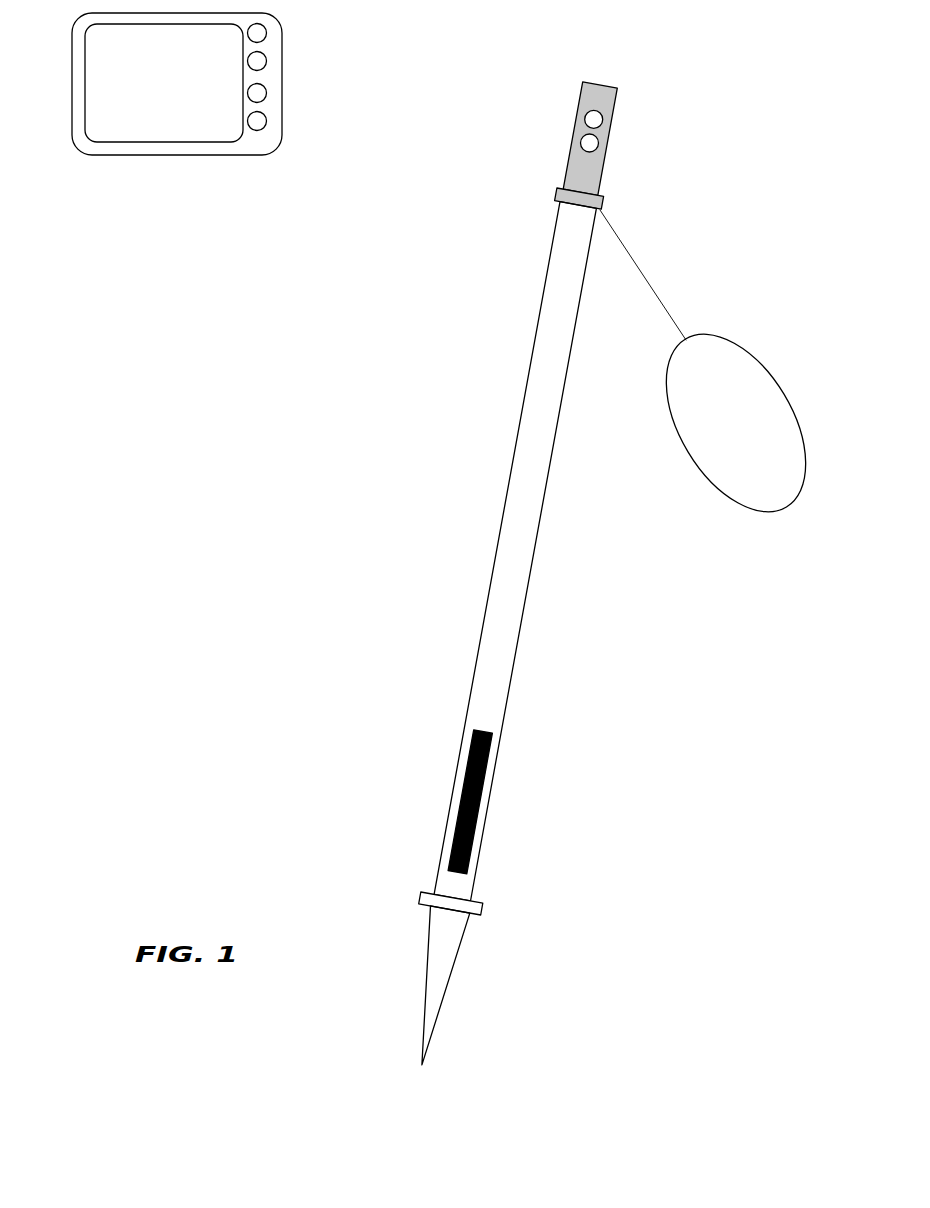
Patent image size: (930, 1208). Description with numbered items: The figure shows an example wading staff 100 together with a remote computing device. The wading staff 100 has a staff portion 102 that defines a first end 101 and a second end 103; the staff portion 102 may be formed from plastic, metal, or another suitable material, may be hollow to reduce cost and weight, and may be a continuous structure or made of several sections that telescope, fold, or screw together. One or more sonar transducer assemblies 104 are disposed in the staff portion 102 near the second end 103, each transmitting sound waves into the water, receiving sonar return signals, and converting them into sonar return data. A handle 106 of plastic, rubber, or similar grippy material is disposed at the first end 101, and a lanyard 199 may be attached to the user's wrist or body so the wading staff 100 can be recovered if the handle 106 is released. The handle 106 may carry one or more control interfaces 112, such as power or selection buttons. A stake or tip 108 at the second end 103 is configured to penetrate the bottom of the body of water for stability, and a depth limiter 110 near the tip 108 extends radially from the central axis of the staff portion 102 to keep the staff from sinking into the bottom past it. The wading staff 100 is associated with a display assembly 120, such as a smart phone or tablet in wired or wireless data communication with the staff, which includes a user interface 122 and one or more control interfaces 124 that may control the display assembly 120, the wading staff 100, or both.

The wading staff 100 is at (562, 555).
The first end 101 is at (516, 127).
The staff portion 102 is at (504, 551).
The second end 103 is at (386, 945).
The transducer assembly 104 is at (422, 801).
The handle 106 is at (544, 120).
The tip 108 is at (392, 985).
The depth limiter 110 is at (395, 885).
The control interface 112 is at (537, 113).
The display assembly 120 is at (180, 120).
The user interface 122 is at (127, 96).
The control interface 124 is at (299, 70).
The lanyard 199 is at (717, 373).